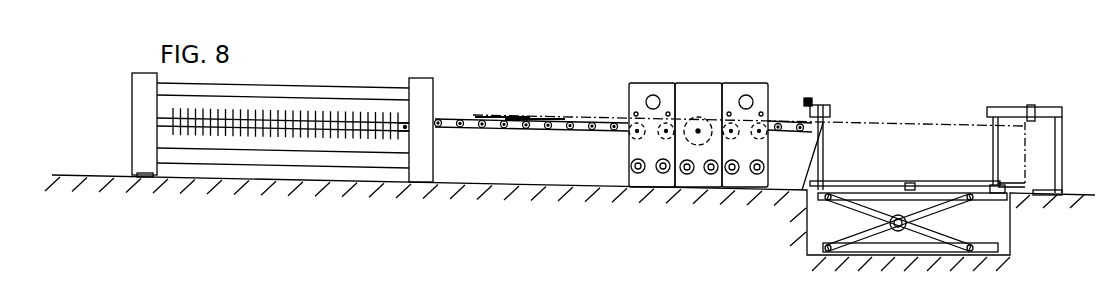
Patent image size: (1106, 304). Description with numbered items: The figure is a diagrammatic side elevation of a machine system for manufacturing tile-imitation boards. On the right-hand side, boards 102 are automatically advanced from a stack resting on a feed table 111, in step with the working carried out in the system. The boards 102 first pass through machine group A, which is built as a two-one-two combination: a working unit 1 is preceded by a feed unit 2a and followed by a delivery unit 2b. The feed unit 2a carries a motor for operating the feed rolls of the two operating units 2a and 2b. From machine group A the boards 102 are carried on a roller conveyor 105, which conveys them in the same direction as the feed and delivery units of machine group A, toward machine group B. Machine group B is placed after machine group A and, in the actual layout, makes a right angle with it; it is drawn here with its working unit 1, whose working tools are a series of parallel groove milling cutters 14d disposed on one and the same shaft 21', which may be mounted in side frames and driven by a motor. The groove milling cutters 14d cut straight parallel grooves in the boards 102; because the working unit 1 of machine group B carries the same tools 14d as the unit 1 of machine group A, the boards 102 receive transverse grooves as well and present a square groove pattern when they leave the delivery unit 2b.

The machine group B is at (281, 80).
The groove milling cutters 14d is at (343, 112).
The shaft 21' is at (433, 92).
The roller conveyor 105 is at (560, 128).
The boards 102 is at (560, 114).
The machine group A is at (712, 80).
The delivery unit 2b is at (652, 95).
The working unit 1 is at (708, 100).
The feed unit 2a is at (754, 95).
The feed table 111 is at (856, 209).